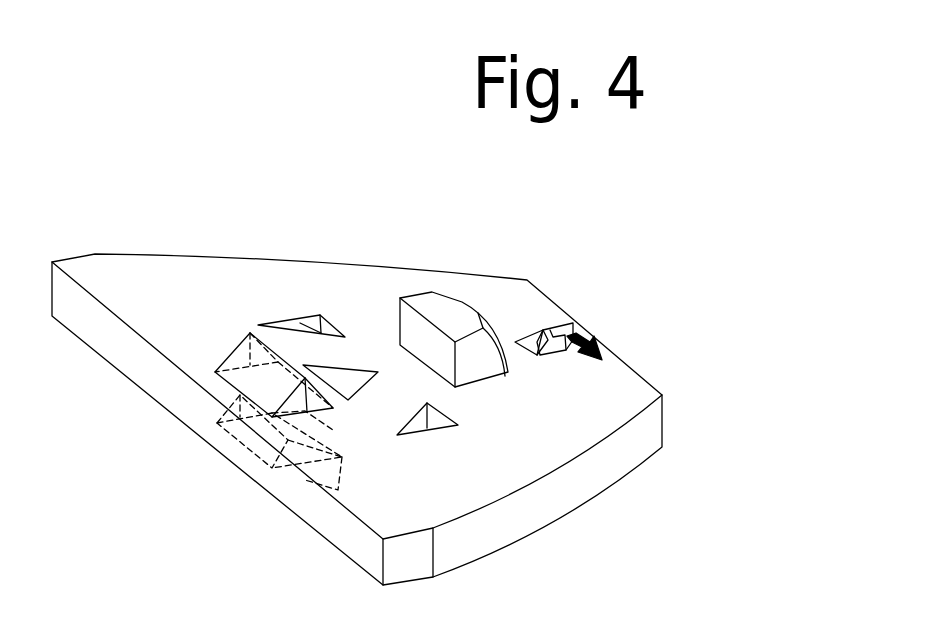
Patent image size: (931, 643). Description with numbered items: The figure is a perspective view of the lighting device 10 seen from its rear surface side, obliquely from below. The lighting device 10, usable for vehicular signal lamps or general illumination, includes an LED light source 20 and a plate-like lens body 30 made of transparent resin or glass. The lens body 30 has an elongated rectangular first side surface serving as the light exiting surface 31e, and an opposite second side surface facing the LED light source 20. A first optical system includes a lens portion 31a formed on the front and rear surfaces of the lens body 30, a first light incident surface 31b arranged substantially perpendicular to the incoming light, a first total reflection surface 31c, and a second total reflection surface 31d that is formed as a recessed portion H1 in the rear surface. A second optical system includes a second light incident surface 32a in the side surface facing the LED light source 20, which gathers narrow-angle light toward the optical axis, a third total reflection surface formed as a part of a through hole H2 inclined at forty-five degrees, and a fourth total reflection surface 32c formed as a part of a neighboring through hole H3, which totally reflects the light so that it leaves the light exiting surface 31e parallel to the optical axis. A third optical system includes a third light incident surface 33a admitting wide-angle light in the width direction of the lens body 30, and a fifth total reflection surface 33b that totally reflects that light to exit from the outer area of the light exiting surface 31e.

The lighting device 10 is at (331, 156).
The LED light source 20 is at (598, 342).
The lens body 30 is at (127, 254).
The lens portion 31a is at (432, 297).
The first light incident surface 31b is at (272, 344).
The first total reflection surface 31c is at (222, 368).
The second total reflection surface 31d is at (221, 450).
The light exiting surface 31e is at (345, 535).
The second light incident surface 32a is at (533, 325).
The fourth total reflection surface 32c is at (293, 322).
The third light incident surface 33a is at (563, 323).
The fifth total reflection surface 33b is at (240, 258).
The recessed portion H1 is at (322, 412).
The through hole H2 is at (352, 380).
The through hole H3 is at (328, 323).